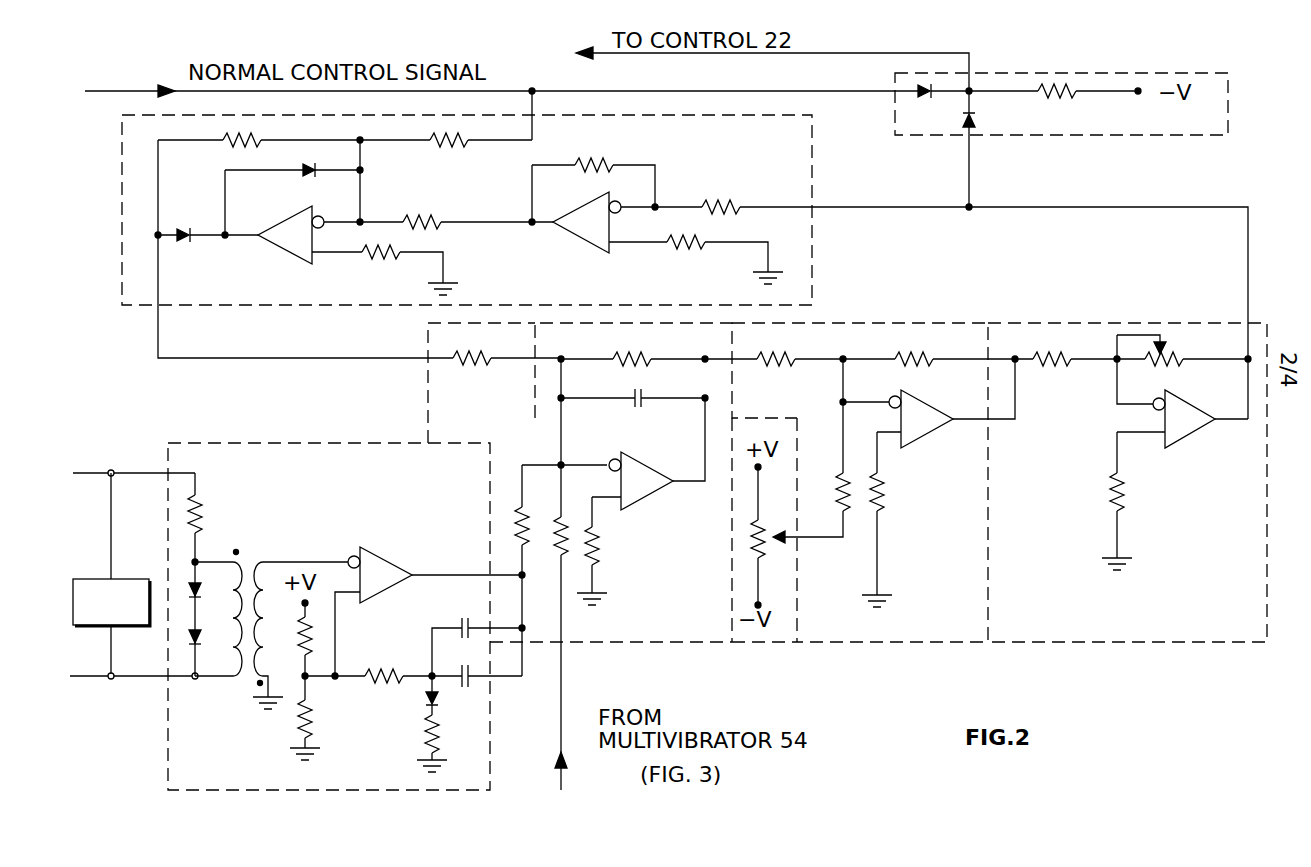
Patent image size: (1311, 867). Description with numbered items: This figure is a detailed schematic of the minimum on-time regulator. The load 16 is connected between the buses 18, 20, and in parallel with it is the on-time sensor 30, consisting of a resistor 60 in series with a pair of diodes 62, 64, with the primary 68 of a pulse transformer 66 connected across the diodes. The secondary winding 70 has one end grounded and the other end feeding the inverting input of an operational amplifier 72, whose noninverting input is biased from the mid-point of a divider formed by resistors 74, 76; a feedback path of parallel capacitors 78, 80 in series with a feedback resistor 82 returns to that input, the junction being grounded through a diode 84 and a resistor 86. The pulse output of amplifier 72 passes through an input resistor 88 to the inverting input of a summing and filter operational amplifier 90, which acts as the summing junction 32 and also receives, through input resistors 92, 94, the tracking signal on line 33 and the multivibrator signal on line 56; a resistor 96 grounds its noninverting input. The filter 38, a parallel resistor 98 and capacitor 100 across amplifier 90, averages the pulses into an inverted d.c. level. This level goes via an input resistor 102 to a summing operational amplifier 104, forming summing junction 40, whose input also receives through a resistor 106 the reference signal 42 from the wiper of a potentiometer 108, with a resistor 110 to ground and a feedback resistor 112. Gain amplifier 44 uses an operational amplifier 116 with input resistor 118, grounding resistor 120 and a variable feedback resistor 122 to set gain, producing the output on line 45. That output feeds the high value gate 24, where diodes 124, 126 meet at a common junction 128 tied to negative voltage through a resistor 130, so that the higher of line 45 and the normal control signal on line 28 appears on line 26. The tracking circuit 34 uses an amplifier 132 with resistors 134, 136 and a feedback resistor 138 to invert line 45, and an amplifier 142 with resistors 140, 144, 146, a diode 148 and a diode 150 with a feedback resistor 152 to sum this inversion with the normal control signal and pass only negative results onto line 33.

The load 16 is at (138, 573).
The bus 18 is at (93, 470).
The bus 20 is at (94, 678).
The high value gate 24 is at (1148, 138).
The output line 26 is at (906, 52).
The normal control signal line 28 is at (702, 90).
The on-time sensor 30 is at (294, 442).
The summing junction 32 is at (427, 384).
The line 33 is at (155, 344).
The tracking circuit 34 is at (810, 192).
The filter 38 is at (690, 323).
The summing junction 40 is at (916, 322).
The reference signal line 42 is at (767, 644).
The gain amplifier 44 is at (1142, 318).
The line 45 is at (1082, 213).
The line 56 is at (563, 675).
The resistor 60 is at (205, 500).
The diode 62 is at (205, 590).
The diode 64 is at (205, 637).
The pulse transformer 66 is at (268, 535).
The primary winding 68 is at (232, 688).
The secondary winding 70 is at (265, 560).
The operational amplifier 72 is at (386, 558).
The resistor 74 is at (312, 638).
The resistor 76 is at (313, 732).
The capacitor 78 is at (466, 617).
The capacitor 80 is at (470, 664).
The feedback resistor 82 is at (401, 668).
The diode 84 is at (422, 698).
The resistor 86 is at (422, 736).
The input resistor 88 is at (522, 506).
The summing and filter operational amplifier 90 is at (652, 494).
The input resistor 92 is at (491, 372).
The input resistor 94 is at (554, 516).
The resistor 96 is at (624, 543).
The resistor 98 is at (645, 376).
The capacitor 100 is at (632, 393).
The input resistor 102 is at (770, 374).
The summing operational amplifier 104 is at (932, 437).
The resistor 106 is at (840, 470).
The potentiometer 108 is at (768, 553).
The resistor 110 is at (886, 494).
The feedback resistor 112 is at (918, 370).
The operational amplifier 116 is at (1195, 438).
The resistor 118 is at (1062, 372).
The resistor 120 is at (1126, 486).
The variable resistor 122 is at (1175, 378).
The diode 124 is at (978, 117).
The diode 126 is at (920, 65).
The common junction 128 is at (962, 98).
The resistor 130 is at (1068, 108).
The operational amplifier 132 is at (577, 232).
The resistor 134 is at (691, 260).
The resistor 136 is at (740, 180).
The feedback resistor 138 is at (607, 152).
The resistor 140 is at (438, 208).
The operational amplifier 142 is at (284, 248).
The resistor 144 is at (386, 270).
The resistor 146 is at (467, 146).
The diode 148 is at (305, 182).
The diode 150 is at (182, 245).
The resistor 152 is at (235, 148).